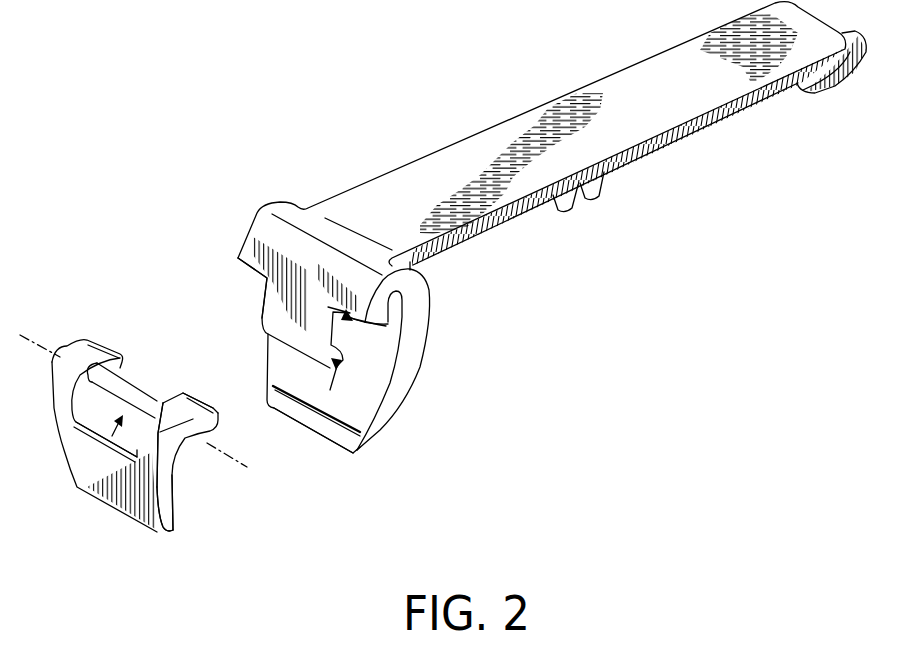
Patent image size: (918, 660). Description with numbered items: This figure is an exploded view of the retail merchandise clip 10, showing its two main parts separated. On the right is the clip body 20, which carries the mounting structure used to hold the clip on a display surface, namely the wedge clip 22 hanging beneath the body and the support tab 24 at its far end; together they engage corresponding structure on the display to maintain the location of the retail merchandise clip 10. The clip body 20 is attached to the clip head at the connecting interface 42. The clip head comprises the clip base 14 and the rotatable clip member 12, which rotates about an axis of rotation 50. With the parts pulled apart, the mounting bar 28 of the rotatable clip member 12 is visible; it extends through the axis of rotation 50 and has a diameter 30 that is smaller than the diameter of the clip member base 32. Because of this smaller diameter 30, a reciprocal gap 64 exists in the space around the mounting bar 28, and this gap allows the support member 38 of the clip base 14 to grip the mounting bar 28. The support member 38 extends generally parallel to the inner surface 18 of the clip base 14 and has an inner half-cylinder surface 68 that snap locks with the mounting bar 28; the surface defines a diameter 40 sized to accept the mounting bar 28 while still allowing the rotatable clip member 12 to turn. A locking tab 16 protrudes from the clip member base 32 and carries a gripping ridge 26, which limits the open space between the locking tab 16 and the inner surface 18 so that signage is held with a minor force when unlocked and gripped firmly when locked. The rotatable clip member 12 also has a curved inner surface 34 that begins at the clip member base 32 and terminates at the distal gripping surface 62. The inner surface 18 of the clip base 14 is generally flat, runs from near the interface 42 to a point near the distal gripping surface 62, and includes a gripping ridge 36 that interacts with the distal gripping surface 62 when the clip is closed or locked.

The retail merchandise clip 10 is at (209, 151).
The rotatable clip member 12 is at (110, 507).
The clip base 14 is at (397, 388).
The locking tab 16 is at (214, 418).
The inner surface 18 is at (360, 407).
The clip body 20 is at (651, 72).
The wedge clip 22 is at (600, 191).
The support tab 24 is at (833, 80).
The gripping ridge 26 is at (215, 409).
The mounting bar 28 is at (124, 385).
The diameter 30 is at (148, 372).
The clip member base 32 is at (180, 444).
The curved inner surface 34 is at (175, 507).
The gripping ridge 36 is at (308, 407).
The support member 38 is at (267, 303).
The diameter 40 is at (355, 319).
The connecting interface 42 is at (332, 233).
The axis of rotation 50 is at (36, 338).
The distal gripping surface 62 is at (164, 528).
The reciprocal gap 64 is at (93, 417).
The inner half-cylinder surface 68 is at (292, 353).